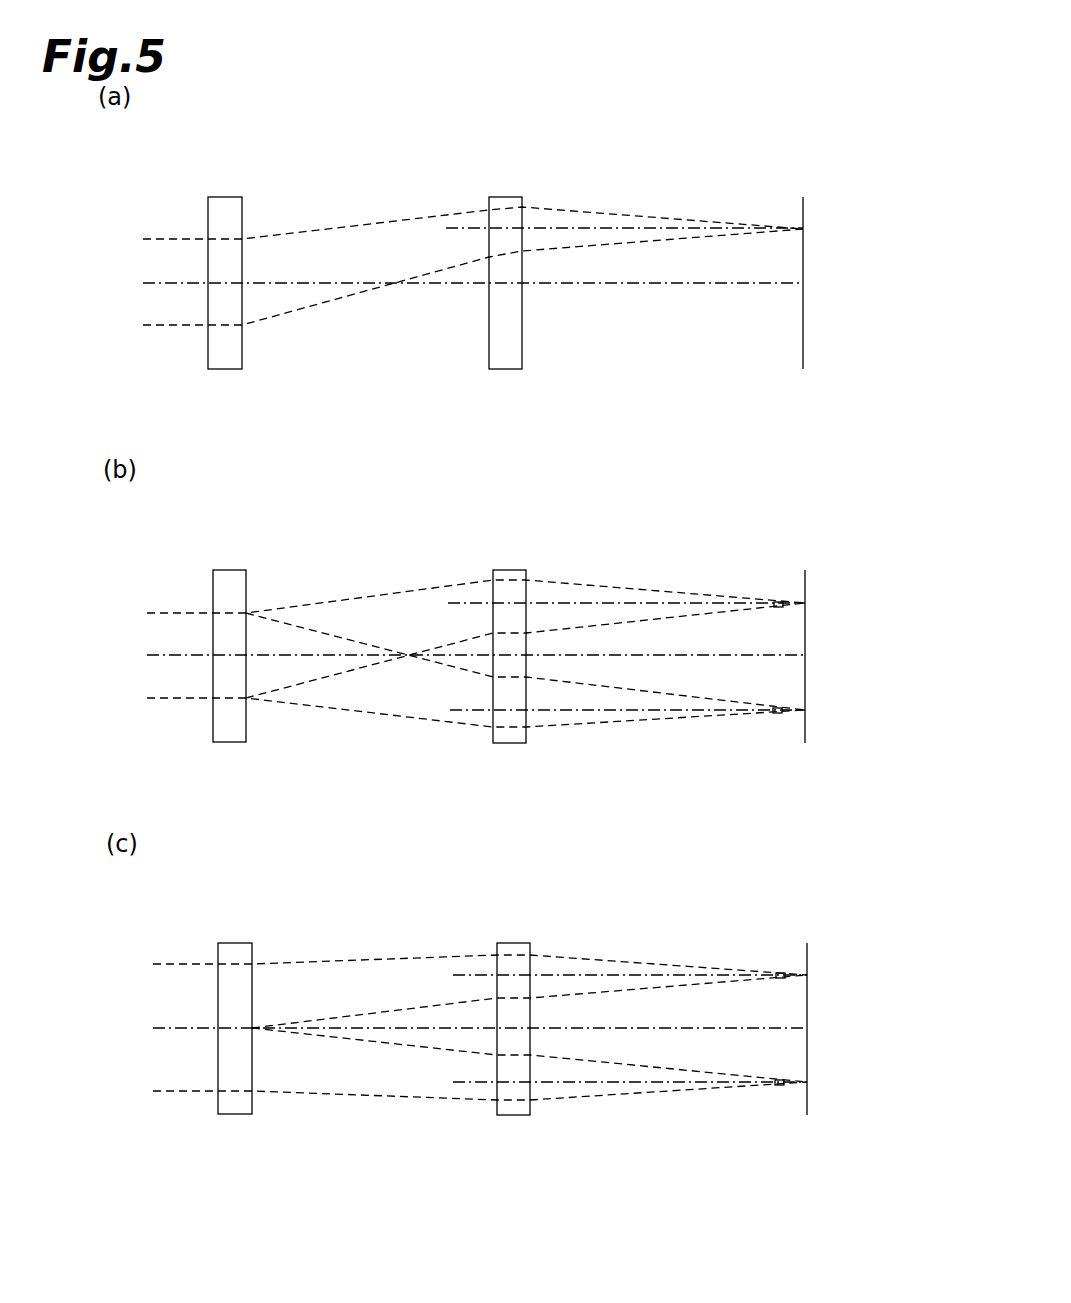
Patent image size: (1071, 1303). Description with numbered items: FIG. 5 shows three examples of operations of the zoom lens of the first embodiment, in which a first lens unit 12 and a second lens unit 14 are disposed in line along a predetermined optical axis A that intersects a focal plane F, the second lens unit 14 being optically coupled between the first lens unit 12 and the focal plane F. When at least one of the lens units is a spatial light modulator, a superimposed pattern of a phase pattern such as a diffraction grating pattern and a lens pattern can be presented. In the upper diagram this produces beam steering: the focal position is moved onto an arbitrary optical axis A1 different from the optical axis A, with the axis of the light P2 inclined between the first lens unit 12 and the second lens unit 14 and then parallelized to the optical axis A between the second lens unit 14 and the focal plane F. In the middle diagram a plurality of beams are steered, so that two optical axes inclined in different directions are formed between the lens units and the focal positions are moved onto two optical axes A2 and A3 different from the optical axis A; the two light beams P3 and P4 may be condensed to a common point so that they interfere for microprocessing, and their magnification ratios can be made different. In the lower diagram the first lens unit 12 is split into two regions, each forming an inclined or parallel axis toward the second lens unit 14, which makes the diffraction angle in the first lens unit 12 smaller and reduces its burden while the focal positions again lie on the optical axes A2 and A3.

The first lens unit 12 is at (208, 218).
The second lens unit 14 is at (507, 197).
The focal plane F is at (801, 207).
The optical axis A is at (662, 284).
The optical axis A1 is at (582, 228).
The optical axis A2 is at (580, 603).
The optical axis A3 is at (583, 711).
The light P2 is at (375, 224).
The light beam P3 is at (642, 590).
The light beam P4 is at (661, 720).